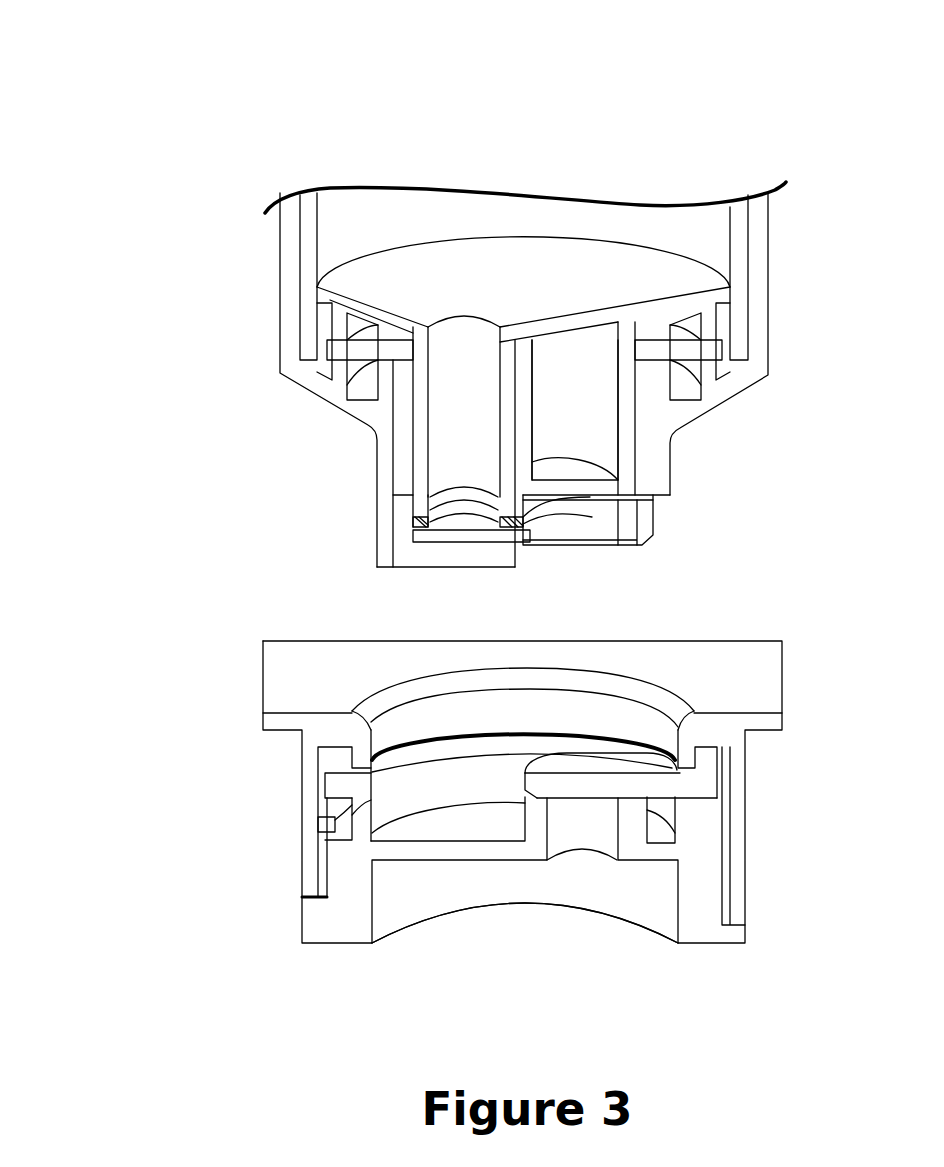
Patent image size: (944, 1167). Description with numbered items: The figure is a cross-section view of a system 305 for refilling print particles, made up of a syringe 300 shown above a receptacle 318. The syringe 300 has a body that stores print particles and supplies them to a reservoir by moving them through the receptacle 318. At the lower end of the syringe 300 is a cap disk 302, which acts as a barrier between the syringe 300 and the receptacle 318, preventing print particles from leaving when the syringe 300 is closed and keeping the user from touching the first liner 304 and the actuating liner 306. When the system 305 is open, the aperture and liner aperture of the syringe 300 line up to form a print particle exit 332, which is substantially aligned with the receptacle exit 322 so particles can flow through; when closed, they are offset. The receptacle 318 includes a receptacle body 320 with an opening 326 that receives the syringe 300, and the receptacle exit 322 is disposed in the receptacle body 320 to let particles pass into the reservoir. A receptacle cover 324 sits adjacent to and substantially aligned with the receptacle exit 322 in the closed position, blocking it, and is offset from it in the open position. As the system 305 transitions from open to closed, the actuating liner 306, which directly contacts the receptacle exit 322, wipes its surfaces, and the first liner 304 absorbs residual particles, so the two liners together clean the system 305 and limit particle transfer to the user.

The syringe 300 is at (520, 138).
The system 305 is at (145, 456).
The print particle exit 332 is at (460, 447).
The actuating liner 306 is at (585, 502).
The first liner 304 is at (590, 518).
The cap disk 302 is at (512, 555).
The opening 326 is at (597, 712).
The receptacle cover 324 is at (708, 784).
The receptacle body 320 is at (745, 903).
The receptacle exit 322 is at (590, 825).
The receptacle 318 is at (520, 908).